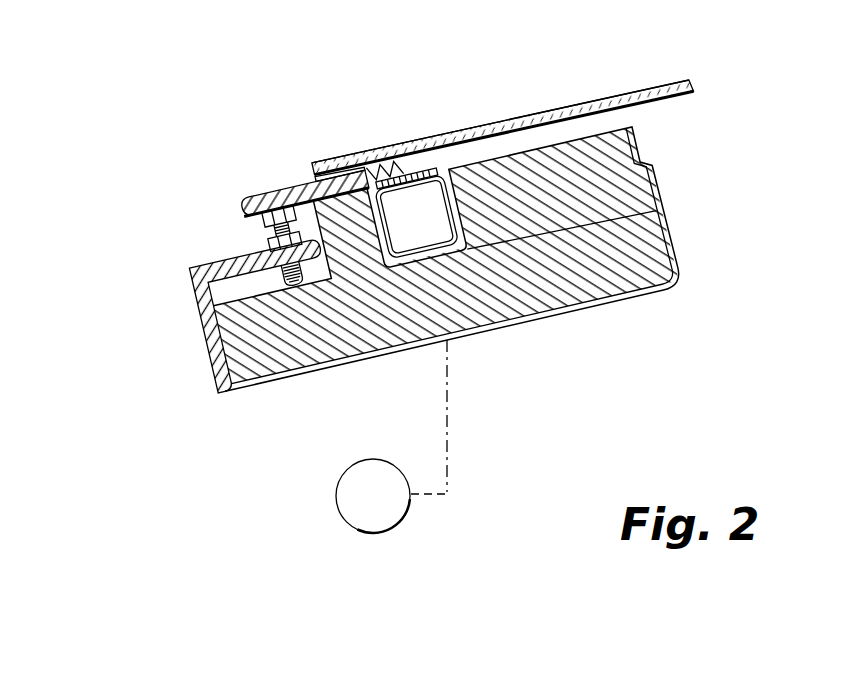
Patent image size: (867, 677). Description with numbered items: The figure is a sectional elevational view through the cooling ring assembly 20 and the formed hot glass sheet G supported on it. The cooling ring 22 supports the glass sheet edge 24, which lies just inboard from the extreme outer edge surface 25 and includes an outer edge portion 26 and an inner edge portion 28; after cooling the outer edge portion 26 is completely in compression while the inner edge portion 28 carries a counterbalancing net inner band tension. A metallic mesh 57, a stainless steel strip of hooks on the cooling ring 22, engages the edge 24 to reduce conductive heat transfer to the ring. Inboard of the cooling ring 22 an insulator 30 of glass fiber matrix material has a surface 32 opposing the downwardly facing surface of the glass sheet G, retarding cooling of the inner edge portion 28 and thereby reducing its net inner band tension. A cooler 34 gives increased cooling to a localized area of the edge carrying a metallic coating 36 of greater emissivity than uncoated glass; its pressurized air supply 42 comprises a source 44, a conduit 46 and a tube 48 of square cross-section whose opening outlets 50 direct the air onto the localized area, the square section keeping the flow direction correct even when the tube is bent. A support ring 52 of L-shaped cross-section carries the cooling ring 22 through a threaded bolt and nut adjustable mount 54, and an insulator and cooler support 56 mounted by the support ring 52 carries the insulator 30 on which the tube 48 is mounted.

The cooling ring assembly 20 is at (157, 260).
The cooling ring 22 is at (285, 188).
The glass sheet edge 24 is at (346, 150).
The extreme outer edge surface 25 is at (310, 172).
The outer edge portion 26 is at (322, 162).
The inner edge portion 28 is at (398, 188).
The insulator 30 is at (592, 266).
The insulator surface 32 is at (597, 132).
The cooler 34 is at (445, 167).
The metallic coating 36 is at (390, 180).
The pressurized air supply 42 is at (421, 522).
The source of pressurized air 44 is at (336, 495).
The conduit 46 is at (452, 422).
The tube 48 is at (463, 217).
The opening outlets 50 is at (428, 182).
The support ring 52 is at (195, 292).
The adjustable mount 54 is at (245, 240).
The insulator and cooler support 56 is at (306, 378).
The metallic mesh 57 is at (248, 200).
The glass sheet G is at (575, 100).